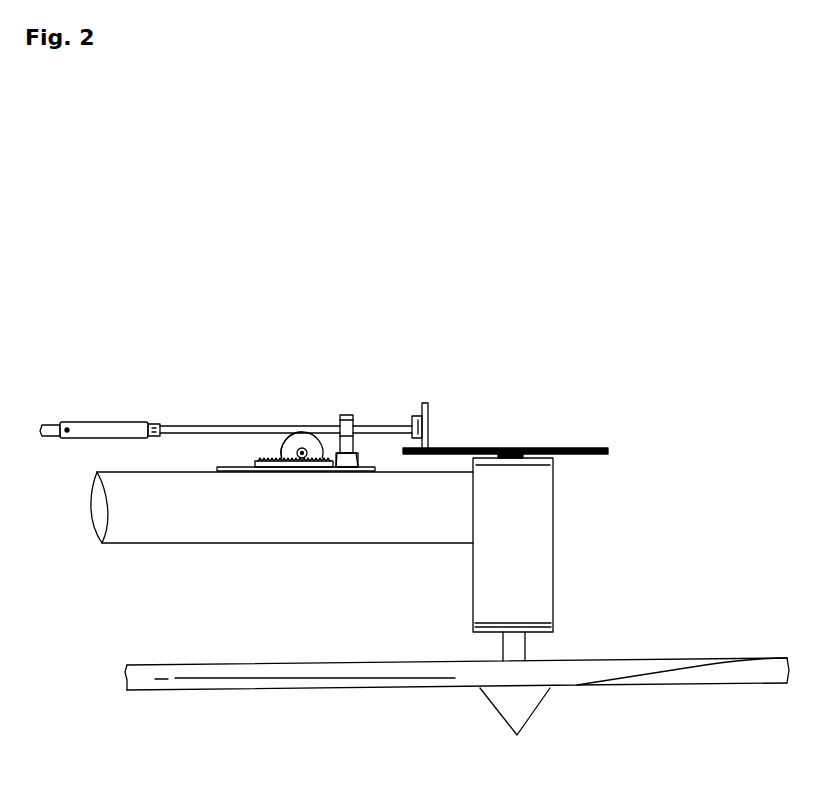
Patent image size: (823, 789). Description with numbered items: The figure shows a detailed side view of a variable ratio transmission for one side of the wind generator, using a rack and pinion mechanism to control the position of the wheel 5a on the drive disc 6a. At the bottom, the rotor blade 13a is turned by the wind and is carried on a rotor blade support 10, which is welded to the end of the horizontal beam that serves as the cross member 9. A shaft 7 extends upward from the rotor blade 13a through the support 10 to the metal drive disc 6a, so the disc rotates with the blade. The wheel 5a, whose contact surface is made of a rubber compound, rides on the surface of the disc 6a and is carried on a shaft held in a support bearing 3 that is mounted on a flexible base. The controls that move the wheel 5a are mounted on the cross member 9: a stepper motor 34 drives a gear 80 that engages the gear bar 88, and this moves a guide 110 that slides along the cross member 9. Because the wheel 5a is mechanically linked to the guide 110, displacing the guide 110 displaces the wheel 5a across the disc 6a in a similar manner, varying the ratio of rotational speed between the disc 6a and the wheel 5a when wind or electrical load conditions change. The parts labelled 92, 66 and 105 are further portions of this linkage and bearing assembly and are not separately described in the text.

The support bearing 3 is at (343, 416).
The handle 92 is at (153, 422).
The gear 80 is at (302, 448).
The stepper motor 34 is at (287, 448).
The gear bar 88 is at (270, 458).
The bearing block 66 is at (355, 416).
The bearing base 105 is at (357, 420).
The guide 110 is at (347, 462).
The wheel 5a is at (424, 402).
The drive disc 6a is at (598, 447).
The rotor blade support 10 is at (556, 557).
The shaft 7 is at (527, 648).
The cross member 9 is at (93, 515).
The rotor blade 13a is at (398, 688).